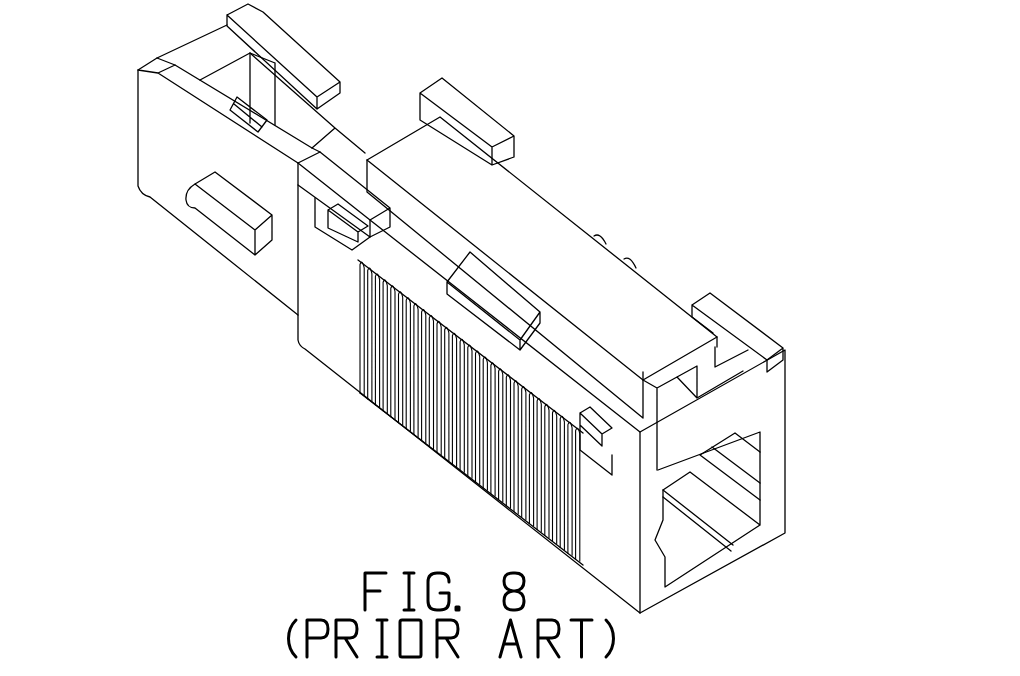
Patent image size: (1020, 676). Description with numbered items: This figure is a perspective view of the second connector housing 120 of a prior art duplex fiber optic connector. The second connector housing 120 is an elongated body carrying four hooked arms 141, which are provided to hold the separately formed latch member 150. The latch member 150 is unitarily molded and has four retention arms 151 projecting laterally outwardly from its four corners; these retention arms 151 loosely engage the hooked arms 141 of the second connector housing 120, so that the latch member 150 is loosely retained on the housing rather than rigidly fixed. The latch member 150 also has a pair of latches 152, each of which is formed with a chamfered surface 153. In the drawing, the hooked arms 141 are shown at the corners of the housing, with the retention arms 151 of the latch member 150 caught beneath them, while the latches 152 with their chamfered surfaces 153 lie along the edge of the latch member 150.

The second connector housing 120 is at (307, 412).
The hooked arms 141 is at (756, 292).
The latch member 150 is at (575, 165).
The retention arms 151 is at (810, 377).
The latches 152 is at (672, 238).
The chamfered surface 153 is at (615, 206).